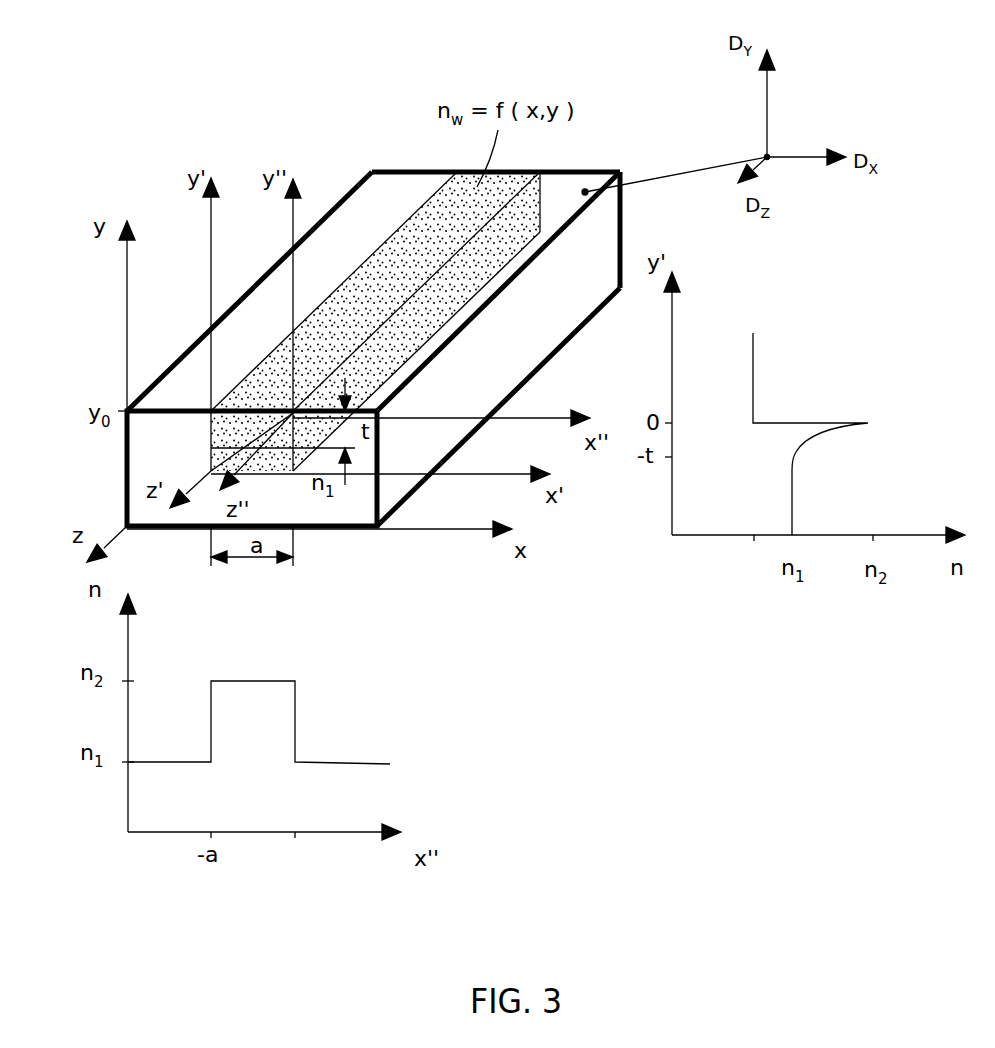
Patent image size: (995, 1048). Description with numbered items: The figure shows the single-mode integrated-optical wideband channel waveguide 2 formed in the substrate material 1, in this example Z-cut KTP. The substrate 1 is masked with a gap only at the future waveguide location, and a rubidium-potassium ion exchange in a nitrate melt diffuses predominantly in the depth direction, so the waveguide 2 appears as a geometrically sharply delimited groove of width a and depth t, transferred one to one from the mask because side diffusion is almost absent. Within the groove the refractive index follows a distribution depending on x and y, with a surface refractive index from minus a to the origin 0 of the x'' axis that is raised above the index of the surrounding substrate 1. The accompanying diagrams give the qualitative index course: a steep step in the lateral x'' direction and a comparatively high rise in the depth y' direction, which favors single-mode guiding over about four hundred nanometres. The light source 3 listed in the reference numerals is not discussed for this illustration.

The substrate 1 is at (448, 430).
The channel waveguide (SOWCW) 2 is at (502, 183).
The origin of x'' axis 0 is at (296, 852).
The light source 3 is at (751, 561).